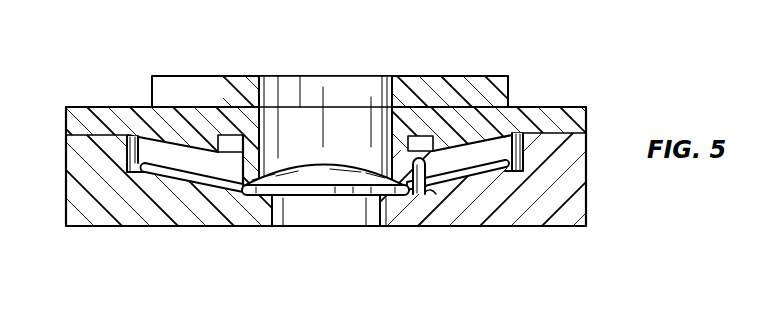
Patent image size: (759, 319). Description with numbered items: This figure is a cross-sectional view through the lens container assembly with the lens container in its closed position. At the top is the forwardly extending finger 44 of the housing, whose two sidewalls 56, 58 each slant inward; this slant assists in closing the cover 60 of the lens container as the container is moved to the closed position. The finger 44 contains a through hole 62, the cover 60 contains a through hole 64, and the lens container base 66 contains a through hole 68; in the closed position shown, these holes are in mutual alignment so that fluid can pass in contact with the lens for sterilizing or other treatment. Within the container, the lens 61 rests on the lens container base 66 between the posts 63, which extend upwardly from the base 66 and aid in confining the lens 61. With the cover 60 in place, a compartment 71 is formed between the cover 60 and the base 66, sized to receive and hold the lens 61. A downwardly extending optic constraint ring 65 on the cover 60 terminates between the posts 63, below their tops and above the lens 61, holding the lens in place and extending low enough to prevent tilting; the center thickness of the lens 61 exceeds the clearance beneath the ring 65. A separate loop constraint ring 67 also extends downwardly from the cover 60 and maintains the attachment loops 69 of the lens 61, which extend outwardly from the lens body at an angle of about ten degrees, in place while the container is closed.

The finger 44 is at (401, 78).
The sidewall 56 is at (224, 89).
The sidewall 58 is at (424, 92).
The cover 60 is at (180, 113).
The lens 61 is at (314, 197).
The through hole 62 is at (382, 85).
The posts 63 is at (428, 198).
The through hole 64 is at (312, 125).
The optic constraint ring 65 is at (242, 157).
The lens container base 66 is at (83, 215).
The loop constraint ring 67 is at (147, 141).
The through hole 68 is at (279, 218).
The attachment loops 69 is at (187, 181).
The compartment 71 is at (437, 156).